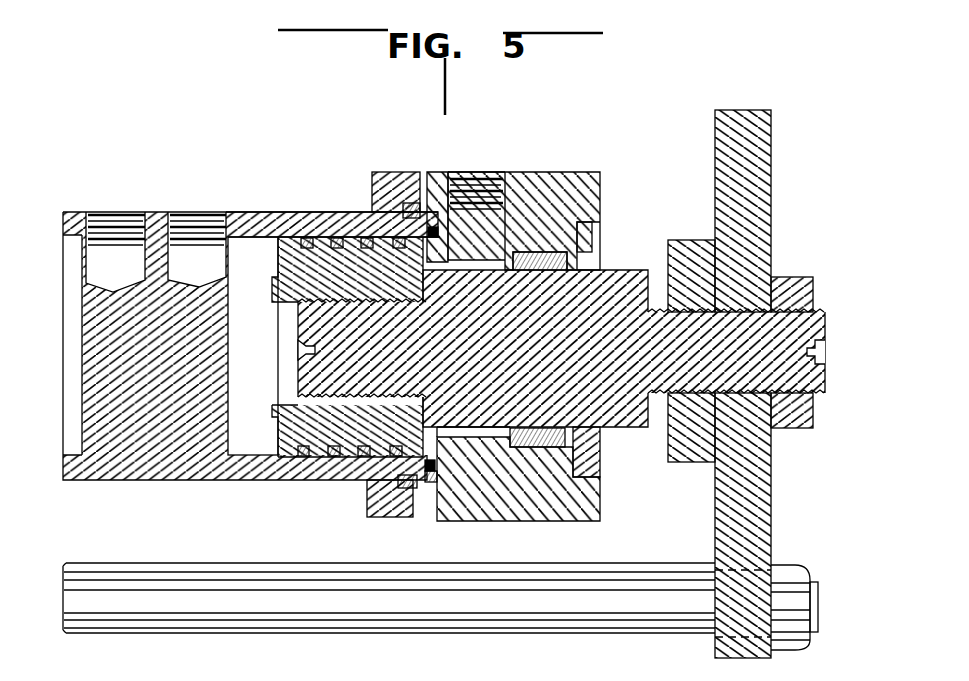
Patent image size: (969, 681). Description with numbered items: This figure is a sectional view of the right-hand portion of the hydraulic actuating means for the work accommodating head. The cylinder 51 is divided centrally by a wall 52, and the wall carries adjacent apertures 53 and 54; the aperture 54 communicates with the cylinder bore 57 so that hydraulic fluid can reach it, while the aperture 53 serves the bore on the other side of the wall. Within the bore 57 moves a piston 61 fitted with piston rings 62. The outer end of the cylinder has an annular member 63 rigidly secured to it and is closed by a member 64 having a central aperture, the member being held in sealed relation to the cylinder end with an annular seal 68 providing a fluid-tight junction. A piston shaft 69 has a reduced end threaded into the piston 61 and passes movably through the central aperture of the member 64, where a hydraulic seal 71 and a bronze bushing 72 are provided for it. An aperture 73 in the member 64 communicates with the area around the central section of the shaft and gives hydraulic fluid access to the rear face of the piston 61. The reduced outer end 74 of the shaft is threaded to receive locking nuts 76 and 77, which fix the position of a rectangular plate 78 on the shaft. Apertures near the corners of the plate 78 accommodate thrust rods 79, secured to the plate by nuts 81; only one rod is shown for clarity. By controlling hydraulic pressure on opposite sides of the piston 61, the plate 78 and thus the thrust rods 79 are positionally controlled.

The cylinder 51 is at (287, 218).
The wall 52 is at (160, 452).
The aperture 53 is at (117, 253).
The aperture 54 is at (197, 255).
The cylinder bore 57 is at (253, 346).
The piston 61 is at (357, 430).
The piston rings 62 is at (333, 456).
The annular member 63 is at (376, 507).
The member 64 is at (488, 503).
The annular seal 68 is at (440, 470).
The piston shaft 69 is at (577, 342).
The hydraulic seal 71 is at (543, 437).
The bronze bushing 72 is at (593, 455).
The aperture 73 is at (493, 205).
The reduced outer end 74 is at (782, 338).
The locking nut 76 is at (693, 450).
The locking nut 77 is at (787, 417).
The plate 78 is at (757, 526).
The thrust rod 79 is at (422, 610).
The nut 81 is at (788, 643).